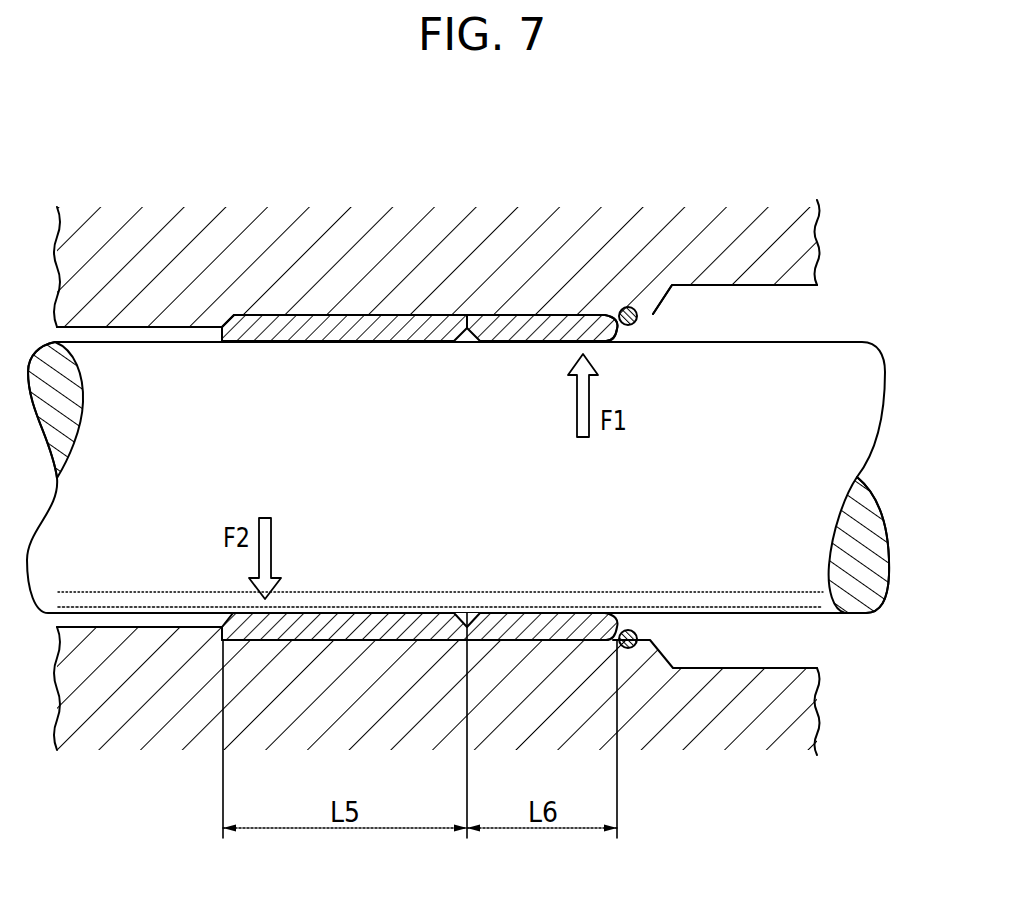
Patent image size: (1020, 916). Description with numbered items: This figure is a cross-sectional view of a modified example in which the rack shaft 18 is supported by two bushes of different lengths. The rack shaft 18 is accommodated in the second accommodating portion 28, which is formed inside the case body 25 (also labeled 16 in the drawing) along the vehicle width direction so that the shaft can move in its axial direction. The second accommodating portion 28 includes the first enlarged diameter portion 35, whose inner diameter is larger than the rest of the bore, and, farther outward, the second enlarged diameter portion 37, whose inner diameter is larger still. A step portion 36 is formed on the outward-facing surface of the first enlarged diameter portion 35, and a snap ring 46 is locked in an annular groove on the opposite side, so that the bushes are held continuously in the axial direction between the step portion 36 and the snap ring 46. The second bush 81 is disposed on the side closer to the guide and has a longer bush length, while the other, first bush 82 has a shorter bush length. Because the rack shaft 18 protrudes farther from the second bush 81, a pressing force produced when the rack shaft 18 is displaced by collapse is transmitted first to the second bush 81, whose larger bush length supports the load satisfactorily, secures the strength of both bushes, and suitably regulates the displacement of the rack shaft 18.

The housing 16 is at (437, 691).
The rack shaft 18 is at (123, 350).
The case body 25 is at (823, 226).
The second accommodating portion 28 is at (176, 330).
The first enlarged diameter portion 35 is at (505, 327).
The step portion 36 is at (420, 239).
The second enlarged diameter portion 37 is at (778, 289).
The snap ring 46 is at (630, 306).
The second bush 81 is at (383, 334).
The second bushing portion 82 is at (545, 325).